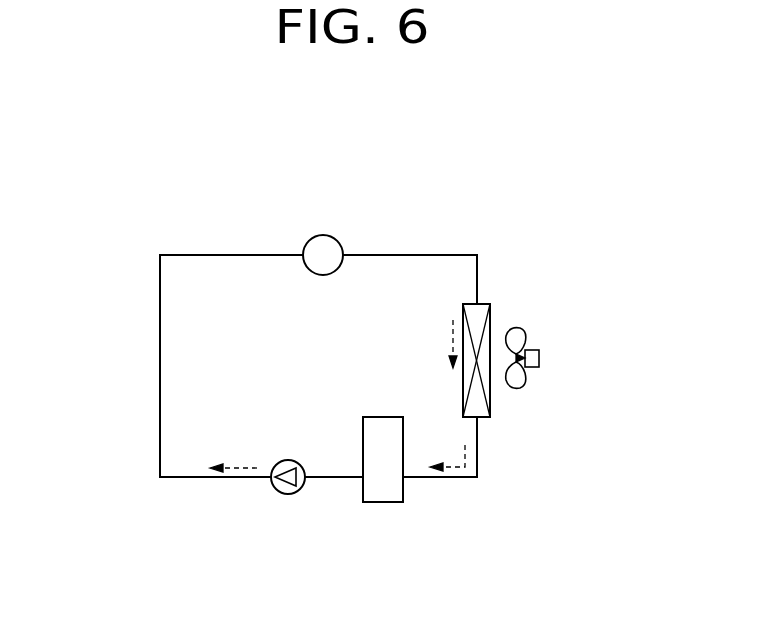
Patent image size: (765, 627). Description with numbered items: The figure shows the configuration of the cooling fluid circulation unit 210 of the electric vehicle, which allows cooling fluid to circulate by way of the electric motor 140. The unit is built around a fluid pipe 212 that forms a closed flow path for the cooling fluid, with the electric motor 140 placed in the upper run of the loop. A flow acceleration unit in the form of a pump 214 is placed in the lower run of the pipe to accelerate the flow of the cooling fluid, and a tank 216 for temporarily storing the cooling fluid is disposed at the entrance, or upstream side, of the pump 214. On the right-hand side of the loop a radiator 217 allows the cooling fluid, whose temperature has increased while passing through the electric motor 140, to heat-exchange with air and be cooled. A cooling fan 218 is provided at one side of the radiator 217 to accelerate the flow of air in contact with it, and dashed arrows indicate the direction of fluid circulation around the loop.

The cooling fluid circulation unit 210 is at (180, 208).
The fluid pipe 212 is at (160, 322).
The electric motor 140 is at (321, 235).
The pump 214 is at (283, 495).
The tank 216 is at (389, 503).
The radiator 217 is at (491, 313).
The cooling fan 218 is at (539, 357).